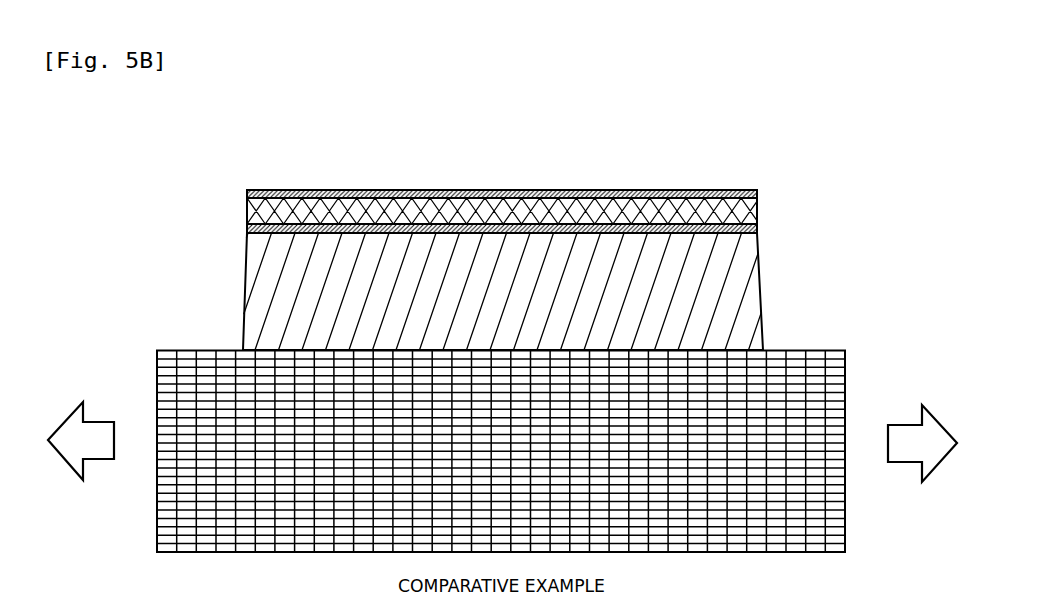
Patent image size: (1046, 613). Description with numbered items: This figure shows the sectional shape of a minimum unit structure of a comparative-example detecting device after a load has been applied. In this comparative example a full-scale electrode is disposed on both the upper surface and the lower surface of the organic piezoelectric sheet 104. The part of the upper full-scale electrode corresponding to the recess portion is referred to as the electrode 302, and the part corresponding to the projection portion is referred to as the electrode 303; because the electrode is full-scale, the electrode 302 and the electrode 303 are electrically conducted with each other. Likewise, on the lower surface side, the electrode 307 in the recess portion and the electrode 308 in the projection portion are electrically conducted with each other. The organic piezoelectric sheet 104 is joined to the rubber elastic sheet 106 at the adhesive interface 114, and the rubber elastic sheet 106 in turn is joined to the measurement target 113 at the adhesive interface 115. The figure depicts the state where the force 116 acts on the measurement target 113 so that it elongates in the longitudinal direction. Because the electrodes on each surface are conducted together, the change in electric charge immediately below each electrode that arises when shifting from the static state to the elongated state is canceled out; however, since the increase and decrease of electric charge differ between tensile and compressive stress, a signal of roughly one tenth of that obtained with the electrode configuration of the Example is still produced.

The electrode 302 is at (647, 191).
The electrode 303 is at (372, 191).
The organic piezoelectric sheet 104 is at (758, 207).
The adhesive interface between organic piezoelectric sheet and rubber elastic sheet 114 is at (758, 229).
The rubber elastic sheet 106 is at (247, 301).
The electrode 307 is at (285, 236).
The electrode 308 is at (713, 236).
The adhesive interface between rubber elastic sheet and measurement target mounting 115 is at (763, 346).
The measurement target 113 is at (165, 366).
The force applied to the measurement target device 116 is at (96, 460).